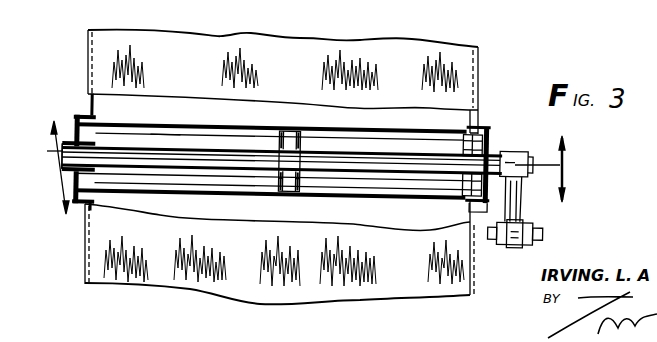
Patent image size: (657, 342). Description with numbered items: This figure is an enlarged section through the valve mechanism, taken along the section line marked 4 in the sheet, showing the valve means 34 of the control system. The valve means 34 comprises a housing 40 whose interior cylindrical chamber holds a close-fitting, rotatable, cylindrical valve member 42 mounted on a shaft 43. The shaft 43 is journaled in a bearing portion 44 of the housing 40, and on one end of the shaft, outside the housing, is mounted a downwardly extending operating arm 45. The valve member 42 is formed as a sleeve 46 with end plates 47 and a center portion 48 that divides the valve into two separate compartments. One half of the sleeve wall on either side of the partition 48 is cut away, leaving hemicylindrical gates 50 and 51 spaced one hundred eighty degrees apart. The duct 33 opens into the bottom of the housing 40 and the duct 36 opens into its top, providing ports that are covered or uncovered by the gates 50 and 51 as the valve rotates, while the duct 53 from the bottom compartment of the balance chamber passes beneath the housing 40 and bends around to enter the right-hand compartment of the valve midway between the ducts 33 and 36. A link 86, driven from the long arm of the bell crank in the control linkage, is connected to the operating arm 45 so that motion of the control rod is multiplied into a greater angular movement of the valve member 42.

The section line 4- 4 is at (309, 167).
The duct 33 is at (275, 303).
The valve means 34 is at (67, 203).
The duct 36 is at (324, 48).
The housing 40 is at (88, 118).
The valve member 42 is at (344, 128).
The shaft 43 is at (167, 154).
The bearing portion 44 is at (498, 153).
The operating arm 45 is at (525, 204).
The sleeve 46 is at (265, 130).
The end plates 47 is at (80, 143).
The center portion 48 is at (278, 182).
The hemicylindrical gate 50 is at (163, 124).
The hemicylindrical gate 51 is at (355, 199).
The duct 53 is at (429, 119).
The link 86 is at (514, 246).